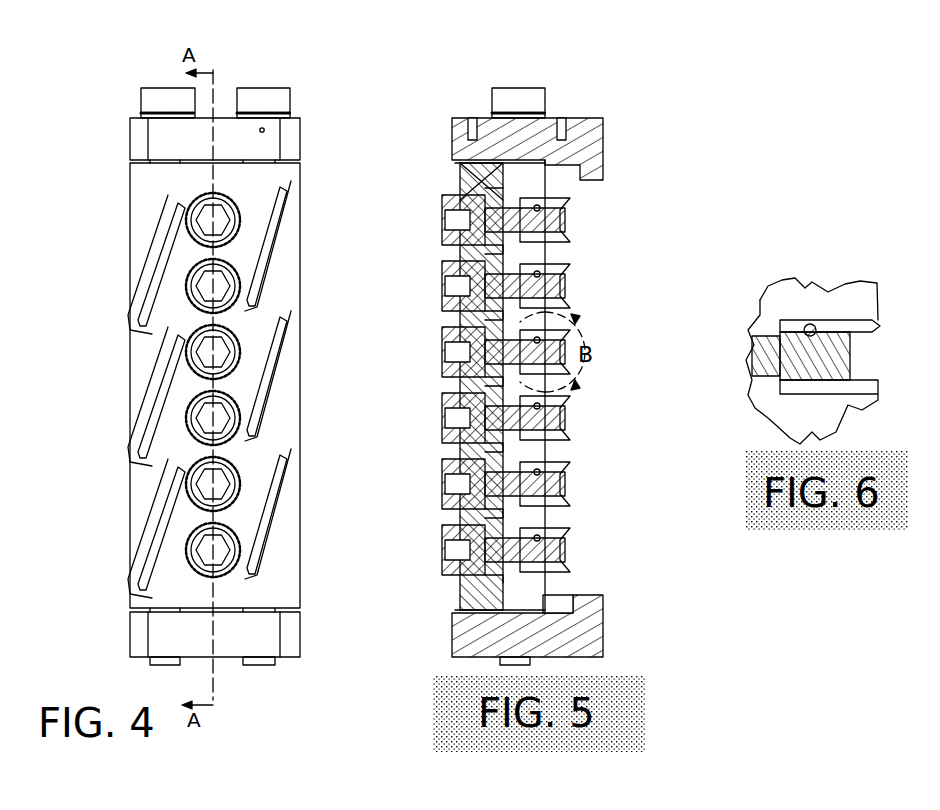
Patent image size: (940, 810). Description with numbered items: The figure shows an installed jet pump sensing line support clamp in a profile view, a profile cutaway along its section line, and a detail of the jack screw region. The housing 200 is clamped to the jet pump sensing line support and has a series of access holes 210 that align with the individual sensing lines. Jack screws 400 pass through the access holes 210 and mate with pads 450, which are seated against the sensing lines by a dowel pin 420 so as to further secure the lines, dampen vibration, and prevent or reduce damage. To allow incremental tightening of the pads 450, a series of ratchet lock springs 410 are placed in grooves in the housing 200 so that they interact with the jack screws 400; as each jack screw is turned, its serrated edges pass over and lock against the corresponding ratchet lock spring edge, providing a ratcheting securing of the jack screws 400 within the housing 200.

In FIG. 4, the housing 200 is at (300, 572).
In FIG. 5, the housing 200 is at (527, 376).
In FIG. 6, the housing 200 is at (797, 412).
In FIG. 4, the access holes 210 is at (232, 350).
In FIG. 5, the access holes 210 is at (502, 237).
In FIG. 4, the jack screws 400 is at (230, 350).
In FIG. 5, the jack screws 400 is at (447, 347).
In FIG. 6, the jack screws 400 is at (785, 360).
In FIG. 4, the ratchet lock springs 410 is at (270, 523).
In FIG. 6, the dowel pin 420 is at (808, 328).
In FIG. 5, the pads 450 is at (568, 563).
In FIG. 6, the pads 450 is at (872, 322).